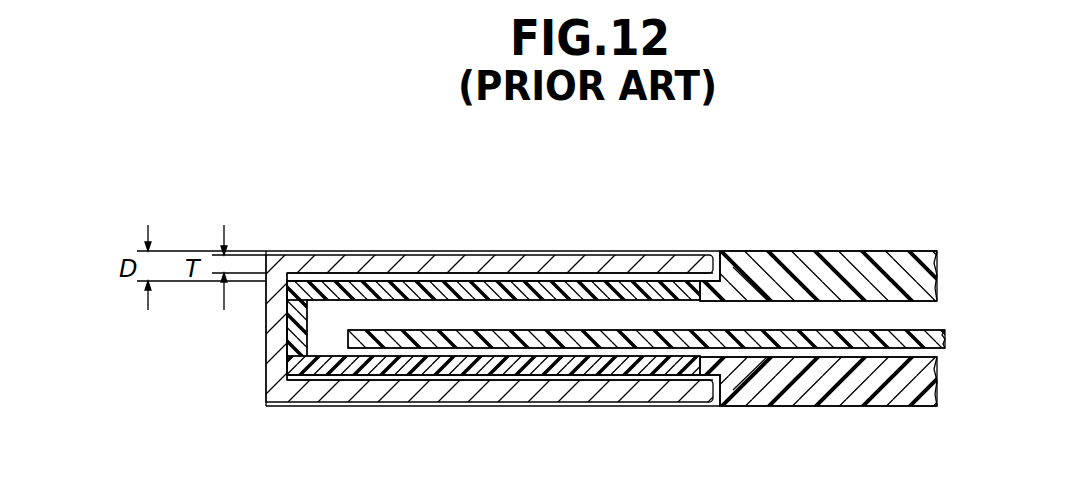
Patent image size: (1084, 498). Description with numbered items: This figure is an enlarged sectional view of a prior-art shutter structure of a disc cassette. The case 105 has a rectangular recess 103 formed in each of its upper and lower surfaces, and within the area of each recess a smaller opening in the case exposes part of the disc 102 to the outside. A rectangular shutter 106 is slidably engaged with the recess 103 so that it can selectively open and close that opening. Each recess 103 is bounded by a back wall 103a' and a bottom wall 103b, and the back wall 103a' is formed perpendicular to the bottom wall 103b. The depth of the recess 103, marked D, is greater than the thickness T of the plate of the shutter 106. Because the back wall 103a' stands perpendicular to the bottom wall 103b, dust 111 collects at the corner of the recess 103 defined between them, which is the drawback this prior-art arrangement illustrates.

The disc 102 is at (902, 375).
The rectangular recess 103 is at (368, 280).
The back wall 103a' is at (646, 327).
The bottom wall 103b is at (551, 290).
The case 105 is at (858, 252).
The rectangular shutter 106 is at (432, 264).
The dust 111 is at (745, 258).